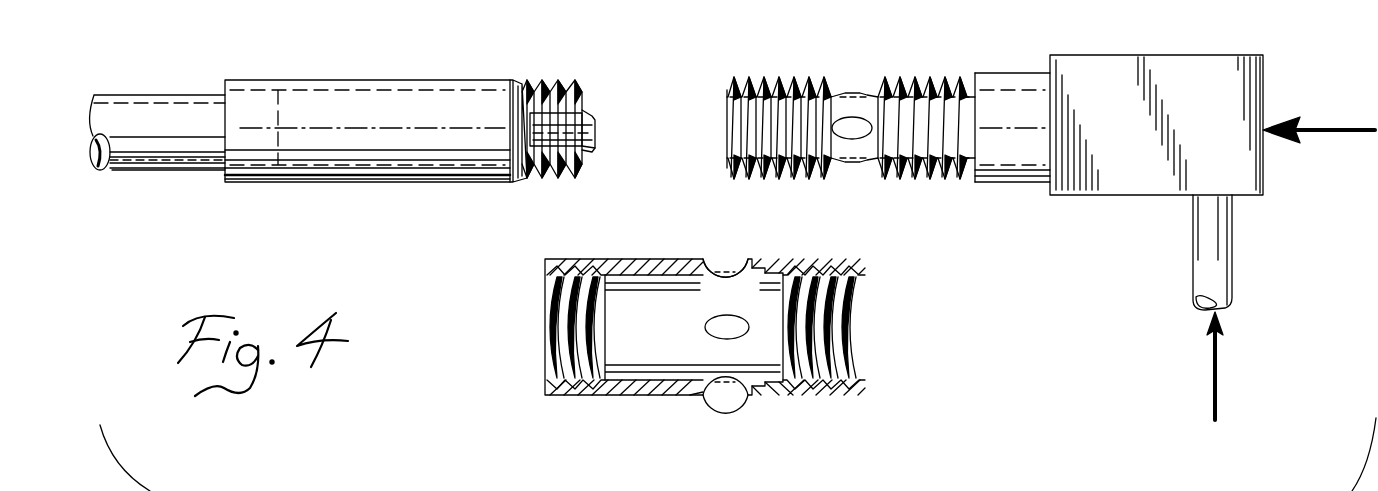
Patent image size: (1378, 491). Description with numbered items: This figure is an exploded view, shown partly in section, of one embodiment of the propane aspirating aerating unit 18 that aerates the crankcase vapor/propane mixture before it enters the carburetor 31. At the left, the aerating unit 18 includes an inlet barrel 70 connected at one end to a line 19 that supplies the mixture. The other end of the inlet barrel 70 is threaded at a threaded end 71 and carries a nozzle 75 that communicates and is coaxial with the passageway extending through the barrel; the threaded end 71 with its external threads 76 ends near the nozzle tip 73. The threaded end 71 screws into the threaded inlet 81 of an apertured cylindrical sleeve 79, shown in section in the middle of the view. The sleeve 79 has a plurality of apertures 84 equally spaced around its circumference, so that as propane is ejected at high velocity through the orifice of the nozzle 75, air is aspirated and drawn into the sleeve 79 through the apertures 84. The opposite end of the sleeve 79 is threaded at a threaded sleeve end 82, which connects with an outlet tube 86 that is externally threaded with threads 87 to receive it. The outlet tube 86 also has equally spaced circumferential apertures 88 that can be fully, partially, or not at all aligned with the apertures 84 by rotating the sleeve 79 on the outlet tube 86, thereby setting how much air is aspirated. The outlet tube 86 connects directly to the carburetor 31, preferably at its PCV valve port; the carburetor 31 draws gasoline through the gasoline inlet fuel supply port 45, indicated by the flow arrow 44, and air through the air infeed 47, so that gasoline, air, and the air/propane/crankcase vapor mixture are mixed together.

The aerating unit 18 is at (498, 373).
The line 19 is at (133, 142).
The carburetor 31 is at (1298, 277).
The fluid inlet flow arrow 44 is at (1213, 383).
The gasoline inlet fuel supply port 45 is at (1218, 260).
The air infeed 47 is at (1352, 130).
The inlet barrel 70 is at (313, 143).
The threaded end 71 is at (528, 182).
The end of inner tube 73 is at (594, 150).
The nozzle 75 is at (596, 131).
The external threads 76 is at (556, 98).
The apertured cylindrical sleeve 79 is at (793, 265).
The threaded inlet 81 is at (556, 332).
The threaded sleeve end 82 is at (858, 300).
The apertures 84 is at (724, 272).
The outlet tube 86 is at (727, 120).
The threads 87 is at (782, 175).
The apertures 88 is at (853, 127).